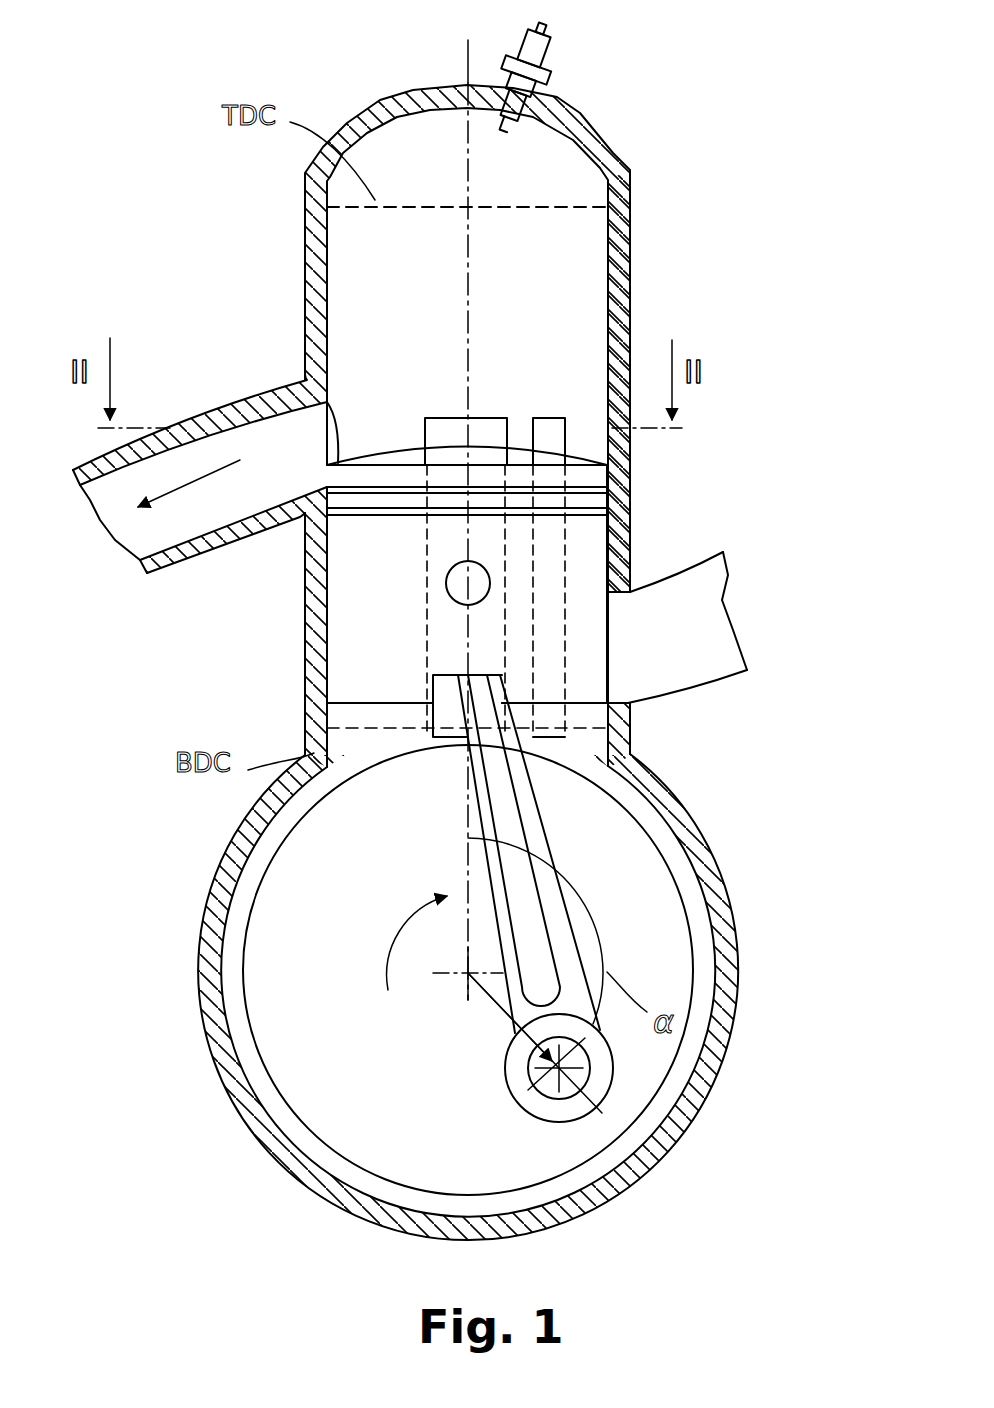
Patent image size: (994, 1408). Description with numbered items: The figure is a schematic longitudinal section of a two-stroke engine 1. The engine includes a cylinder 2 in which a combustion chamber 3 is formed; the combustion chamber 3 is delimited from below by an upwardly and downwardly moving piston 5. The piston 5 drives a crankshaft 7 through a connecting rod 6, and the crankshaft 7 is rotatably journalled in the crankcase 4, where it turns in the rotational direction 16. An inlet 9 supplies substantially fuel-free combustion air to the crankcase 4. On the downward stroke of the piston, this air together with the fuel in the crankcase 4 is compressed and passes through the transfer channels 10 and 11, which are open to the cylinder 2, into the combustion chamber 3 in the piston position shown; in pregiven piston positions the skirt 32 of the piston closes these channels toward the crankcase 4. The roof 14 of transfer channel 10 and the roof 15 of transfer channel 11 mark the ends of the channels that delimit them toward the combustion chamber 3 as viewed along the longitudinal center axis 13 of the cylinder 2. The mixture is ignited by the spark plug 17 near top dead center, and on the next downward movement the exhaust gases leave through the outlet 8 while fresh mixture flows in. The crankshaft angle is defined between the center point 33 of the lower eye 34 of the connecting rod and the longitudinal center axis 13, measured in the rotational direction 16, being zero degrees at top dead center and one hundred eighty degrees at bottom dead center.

The two-stroke engine 1 is at (670, 150).
The cylinder 2 is at (318, 228).
The combustion chamber 3 is at (562, 248).
The crankcase 4 is at (678, 1075).
The piston 5 is at (368, 650).
The connecting rod 6 is at (522, 793).
The crankshaft 7 is at (467, 975).
The outlet 8 is at (140, 537).
The inlet 9 is at (618, 645).
The transfer channel 10 is at (552, 437).
The transfer channel 11 is at (437, 433).
The longitudinal center axis 13 is at (465, 52).
The roof 14 is at (556, 408).
The roof 15 is at (434, 408).
The rotational direction 16 is at (405, 918).
The spark plug 17 is at (540, 56).
The skirt 32 is at (357, 688).
The center point 33 is at (528, 1110).
The lower eye 34 is at (523, 1082).